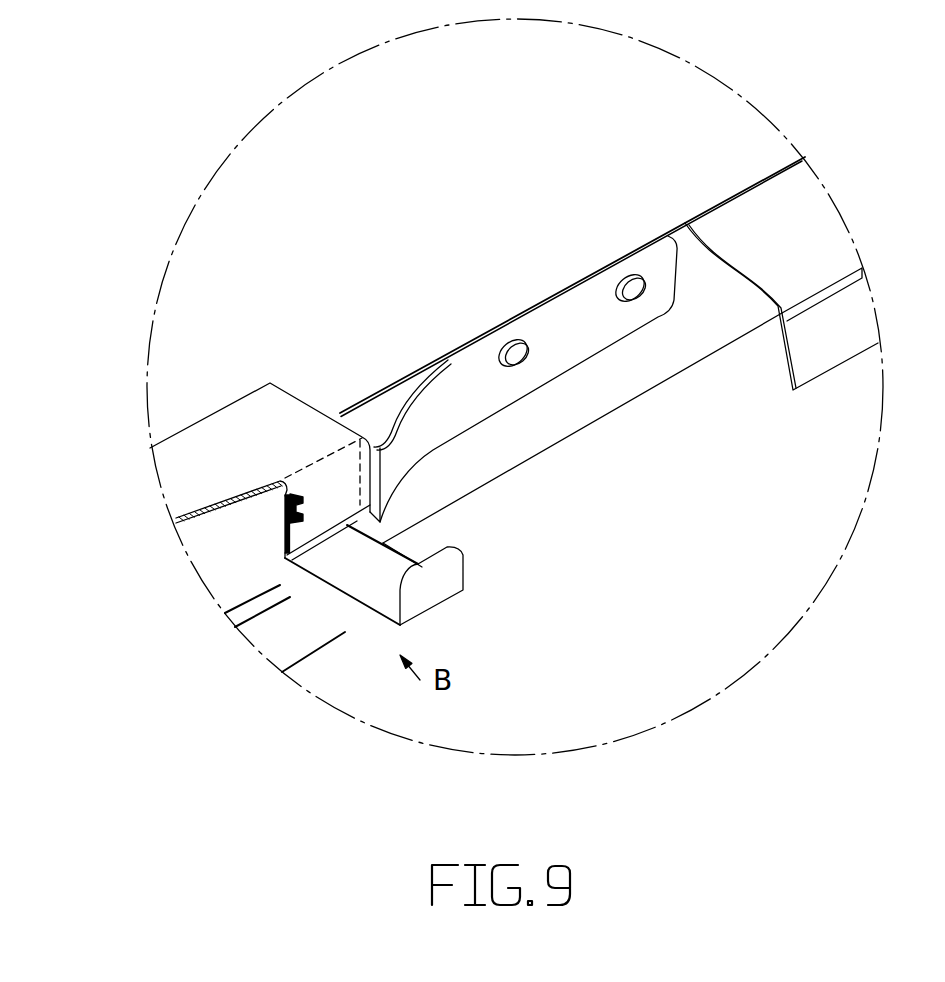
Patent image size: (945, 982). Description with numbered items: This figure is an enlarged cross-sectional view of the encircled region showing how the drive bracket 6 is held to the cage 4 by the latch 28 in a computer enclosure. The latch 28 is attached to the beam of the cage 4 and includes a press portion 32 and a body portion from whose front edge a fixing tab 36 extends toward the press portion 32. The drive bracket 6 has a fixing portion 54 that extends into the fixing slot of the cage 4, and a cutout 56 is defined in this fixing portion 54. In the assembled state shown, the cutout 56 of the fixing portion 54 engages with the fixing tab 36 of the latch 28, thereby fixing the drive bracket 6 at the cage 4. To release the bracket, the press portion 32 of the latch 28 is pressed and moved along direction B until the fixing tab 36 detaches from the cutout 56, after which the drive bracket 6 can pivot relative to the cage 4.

The cage 4 is at (812, 220).
The drive bracket 6 is at (238, 428).
The latch 28 is at (450, 407).
The press portion 32 is at (432, 582).
The fixing tab 36 is at (285, 552).
The fixing portion 54 is at (344, 512).
The cutout 56 is at (303, 505).